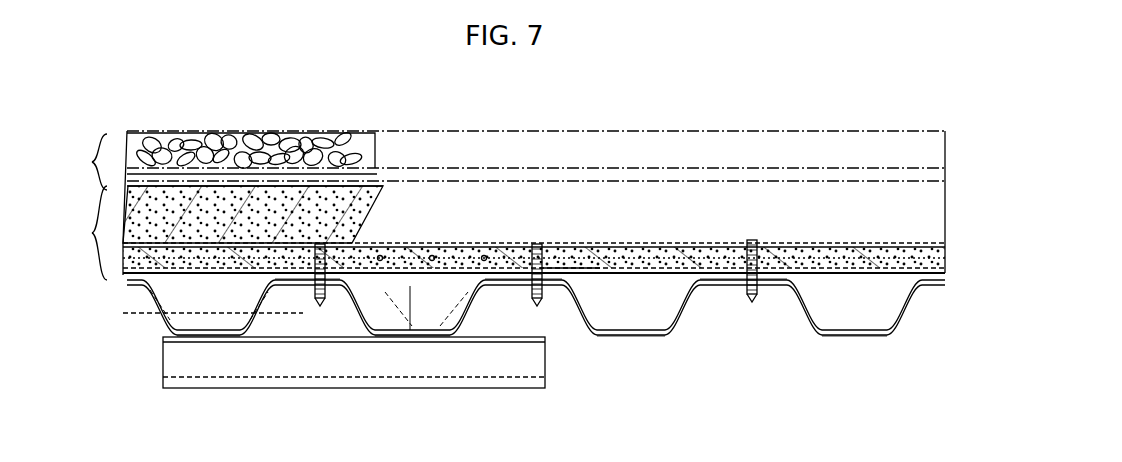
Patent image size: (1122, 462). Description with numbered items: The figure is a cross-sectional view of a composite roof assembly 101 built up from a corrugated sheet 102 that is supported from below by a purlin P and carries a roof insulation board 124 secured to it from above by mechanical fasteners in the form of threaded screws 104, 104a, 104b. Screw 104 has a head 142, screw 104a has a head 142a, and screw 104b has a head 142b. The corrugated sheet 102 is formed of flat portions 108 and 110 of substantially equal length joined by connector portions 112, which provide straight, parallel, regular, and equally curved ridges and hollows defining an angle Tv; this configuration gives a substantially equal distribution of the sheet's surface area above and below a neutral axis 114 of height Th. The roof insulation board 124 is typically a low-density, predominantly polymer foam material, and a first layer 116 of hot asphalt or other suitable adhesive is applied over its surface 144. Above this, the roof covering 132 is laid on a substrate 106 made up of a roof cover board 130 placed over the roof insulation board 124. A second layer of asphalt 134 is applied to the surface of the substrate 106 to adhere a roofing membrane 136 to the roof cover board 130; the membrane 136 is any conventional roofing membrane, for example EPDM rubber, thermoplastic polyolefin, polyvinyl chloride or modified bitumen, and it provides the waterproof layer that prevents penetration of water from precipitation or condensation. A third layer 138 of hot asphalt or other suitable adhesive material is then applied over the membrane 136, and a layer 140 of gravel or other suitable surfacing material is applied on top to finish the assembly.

The composite roof assembly 101 is at (124, 128).
The roof covering 132 is at (496, 136).
The layer of gravel 140 is at (155, 143).
The third layer of hot asphalt 138 is at (225, 170).
The roofing membrane 136 is at (277, 180).
The second layer of asphalt 134 is at (338, 187).
The roof cover board 130 is at (383, 184).
The substrate 106 is at (249, 186).
The roof insulation board 124 is at (534, 228).
The first layer of hot asphalt 116 is at (500, 238).
The insulation surface 144 is at (548, 255).
The head of screw 104a 142a is at (326, 246).
The head of screw 104b 142b is at (540, 245).
The head of screw 104 142 is at (753, 242).
The corrugated sheet 102 is at (132, 288).
The neutral axis 114 is at (141, 316).
The height of neutral axis Th is at (192, 317).
The angle Tv is at (410, 318).
The threaded screw 104a is at (320, 303).
The threaded screw 104b is at (537, 308).
The threaded screw 104 is at (751, 296).
The flat portion 108 is at (340, 295).
The flat portion 110 is at (217, 338).
The connector portion 112 is at (412, 340).
The purlin P is at (312, 378).